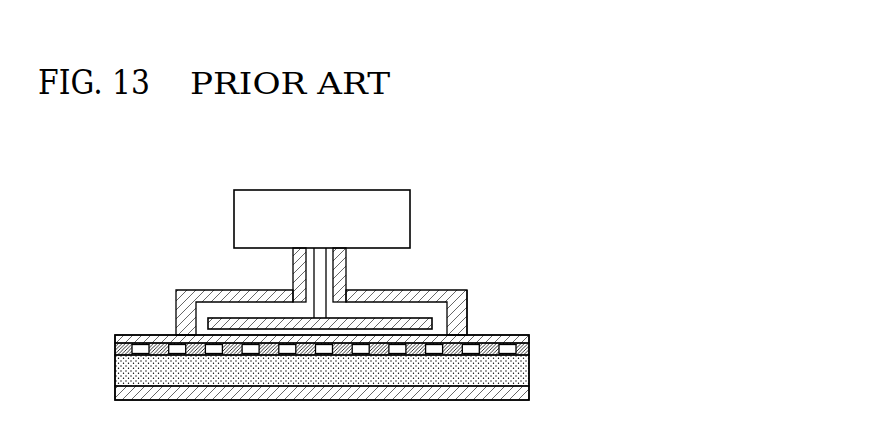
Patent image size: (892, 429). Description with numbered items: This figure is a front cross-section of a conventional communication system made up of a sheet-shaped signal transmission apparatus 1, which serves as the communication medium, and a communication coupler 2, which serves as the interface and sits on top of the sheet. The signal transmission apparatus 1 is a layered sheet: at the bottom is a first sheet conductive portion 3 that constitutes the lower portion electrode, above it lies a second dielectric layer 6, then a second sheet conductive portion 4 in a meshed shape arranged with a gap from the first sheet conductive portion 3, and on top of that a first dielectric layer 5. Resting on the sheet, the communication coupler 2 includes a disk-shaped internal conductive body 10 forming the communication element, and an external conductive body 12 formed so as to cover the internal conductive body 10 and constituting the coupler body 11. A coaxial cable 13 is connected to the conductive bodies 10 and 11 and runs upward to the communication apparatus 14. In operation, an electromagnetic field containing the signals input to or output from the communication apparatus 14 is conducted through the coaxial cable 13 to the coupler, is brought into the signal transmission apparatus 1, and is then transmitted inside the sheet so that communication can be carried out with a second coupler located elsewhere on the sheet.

The signal transmission apparatus 1 is at (348, 367).
The communication coupler 2 is at (516, 206).
The first sheet conductive portion 3 is at (116, 392).
The second sheet conductive portion 4 is at (116, 349).
The first dielectric layer 5 is at (115, 338).
The second dielectric layer 6 is at (116, 371).
The internal conductive body 10 is at (424, 317).
The coupler body 11 is at (467, 297).
The external conductive body 12 is at (268, 290).
The coaxial cable 13 is at (293, 263).
The communication apparatus 14 is at (365, 190).